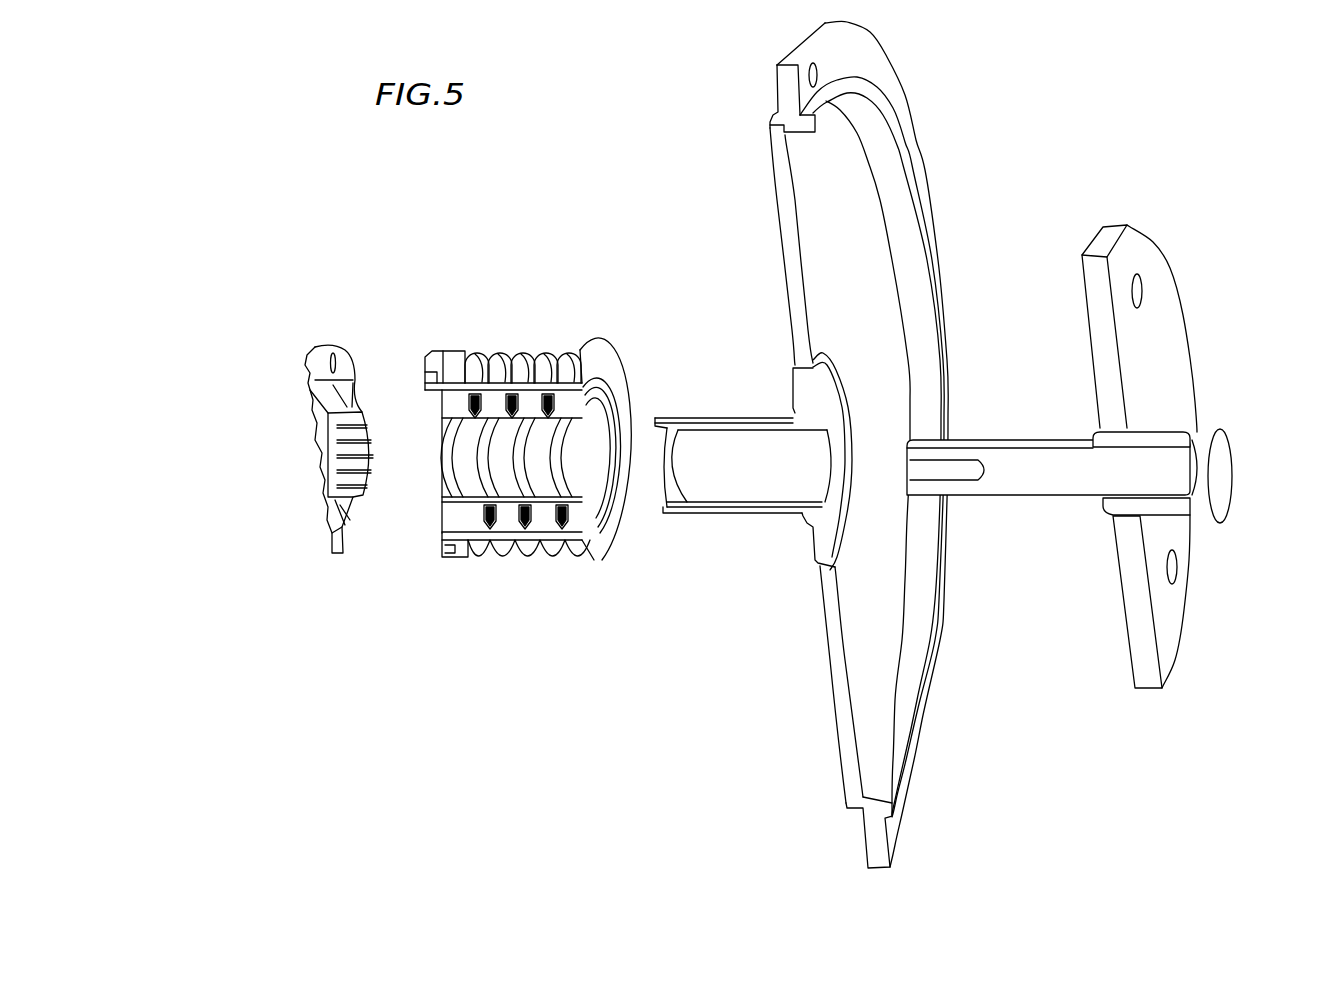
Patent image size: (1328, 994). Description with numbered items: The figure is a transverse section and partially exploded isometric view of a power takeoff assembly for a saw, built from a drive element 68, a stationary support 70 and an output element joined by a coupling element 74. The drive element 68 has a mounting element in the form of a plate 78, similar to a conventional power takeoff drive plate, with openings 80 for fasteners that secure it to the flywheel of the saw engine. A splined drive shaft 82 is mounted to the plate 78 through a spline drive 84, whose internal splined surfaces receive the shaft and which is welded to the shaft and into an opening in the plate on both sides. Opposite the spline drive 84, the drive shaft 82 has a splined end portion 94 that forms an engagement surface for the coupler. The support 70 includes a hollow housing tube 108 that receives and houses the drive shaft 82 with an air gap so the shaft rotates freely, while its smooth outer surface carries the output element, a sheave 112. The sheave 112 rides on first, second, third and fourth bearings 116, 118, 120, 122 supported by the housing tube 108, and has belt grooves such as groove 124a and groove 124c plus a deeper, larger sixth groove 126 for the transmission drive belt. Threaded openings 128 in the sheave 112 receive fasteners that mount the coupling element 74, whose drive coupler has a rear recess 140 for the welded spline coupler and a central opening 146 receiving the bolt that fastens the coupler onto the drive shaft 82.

The drive element 68 is at (1090, 392).
The stationary support 70 is at (876, 441).
The coupling element 74 is at (288, 482).
The plate 78 is at (1177, 456).
The openings 80 is at (1143, 290).
The drive shaft 82 is at (1167, 473).
The spline drive 84 is at (1172, 518).
The end portion 94 is at (966, 538).
The housing tube 108 is at (741, 508).
The sheave 112 is at (510, 395).
The first bearing 116 is at (463, 540).
The second bearing 118 is at (508, 548).
The third bearing 120 is at (545, 545).
The fourth bearing 122 is at (585, 546).
The groove 124a is at (590, 318).
The groove 124c is at (488, 320).
The sixth groove 126 is at (458, 330).
The threaded openings 128 is at (440, 542).
The recess 140 is at (348, 352).
The central opening 146 is at (310, 459).